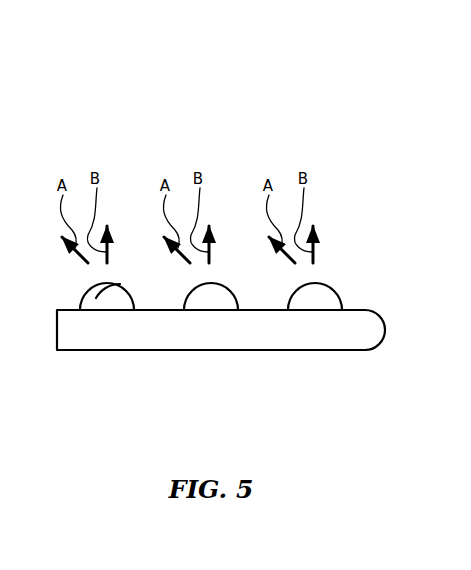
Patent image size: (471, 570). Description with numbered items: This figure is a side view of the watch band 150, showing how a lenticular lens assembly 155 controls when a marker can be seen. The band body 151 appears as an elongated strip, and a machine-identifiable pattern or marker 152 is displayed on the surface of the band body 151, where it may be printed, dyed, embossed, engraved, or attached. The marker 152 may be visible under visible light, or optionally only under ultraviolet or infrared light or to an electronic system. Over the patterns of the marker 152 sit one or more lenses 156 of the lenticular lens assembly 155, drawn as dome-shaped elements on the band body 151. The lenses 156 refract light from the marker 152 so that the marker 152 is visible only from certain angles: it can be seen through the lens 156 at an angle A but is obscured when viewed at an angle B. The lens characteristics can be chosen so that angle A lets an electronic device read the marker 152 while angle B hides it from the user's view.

The watch band 150 is at (283, 92).
The band body 151 is at (153, 332).
The marker 152 is at (107, 311).
The lenticular lens assembly 155 is at (288, 140).
The lens 156 is at (115, 284).